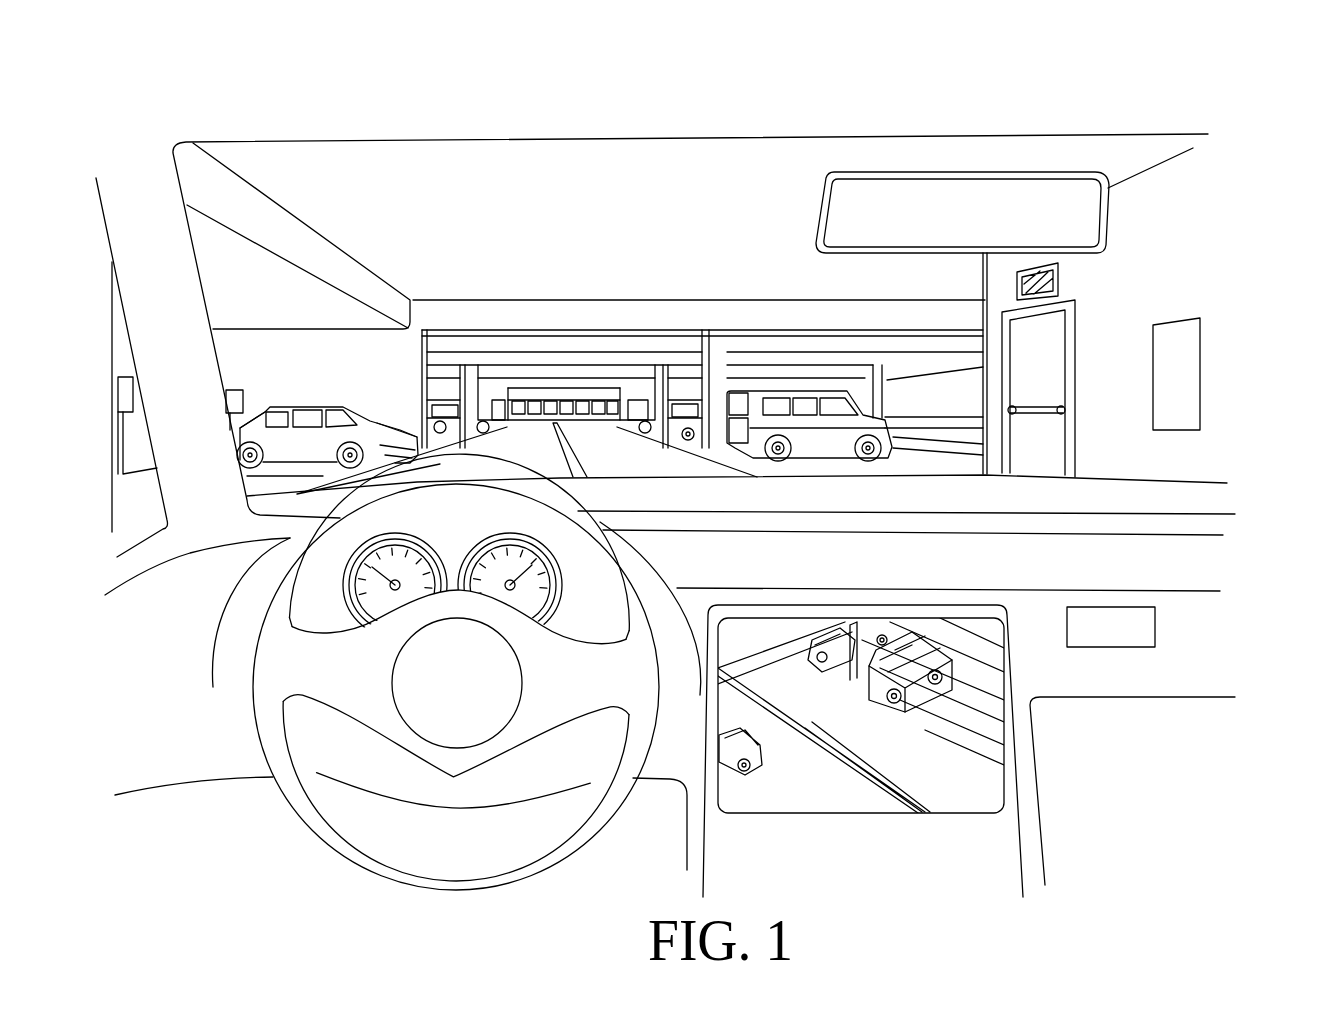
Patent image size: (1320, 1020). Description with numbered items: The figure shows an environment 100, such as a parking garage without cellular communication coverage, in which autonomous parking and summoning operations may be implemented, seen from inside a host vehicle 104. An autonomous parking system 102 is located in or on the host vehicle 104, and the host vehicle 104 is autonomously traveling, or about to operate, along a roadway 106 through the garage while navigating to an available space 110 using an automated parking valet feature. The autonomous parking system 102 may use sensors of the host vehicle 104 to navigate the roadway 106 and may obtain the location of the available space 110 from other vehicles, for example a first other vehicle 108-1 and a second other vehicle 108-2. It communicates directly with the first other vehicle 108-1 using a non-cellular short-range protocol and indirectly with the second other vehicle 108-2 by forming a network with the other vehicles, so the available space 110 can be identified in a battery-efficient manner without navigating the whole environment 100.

The environment 100 is at (1236, 82).
The autonomous parking system 102 is at (1113, 647).
The host vehicle 104 is at (240, 800).
The roadway 106 is at (535, 446).
The first other vehicle 108-1 is at (680, 417).
The second other vehicle 108-2 is at (762, 443).
The available space 110 is at (952, 735).